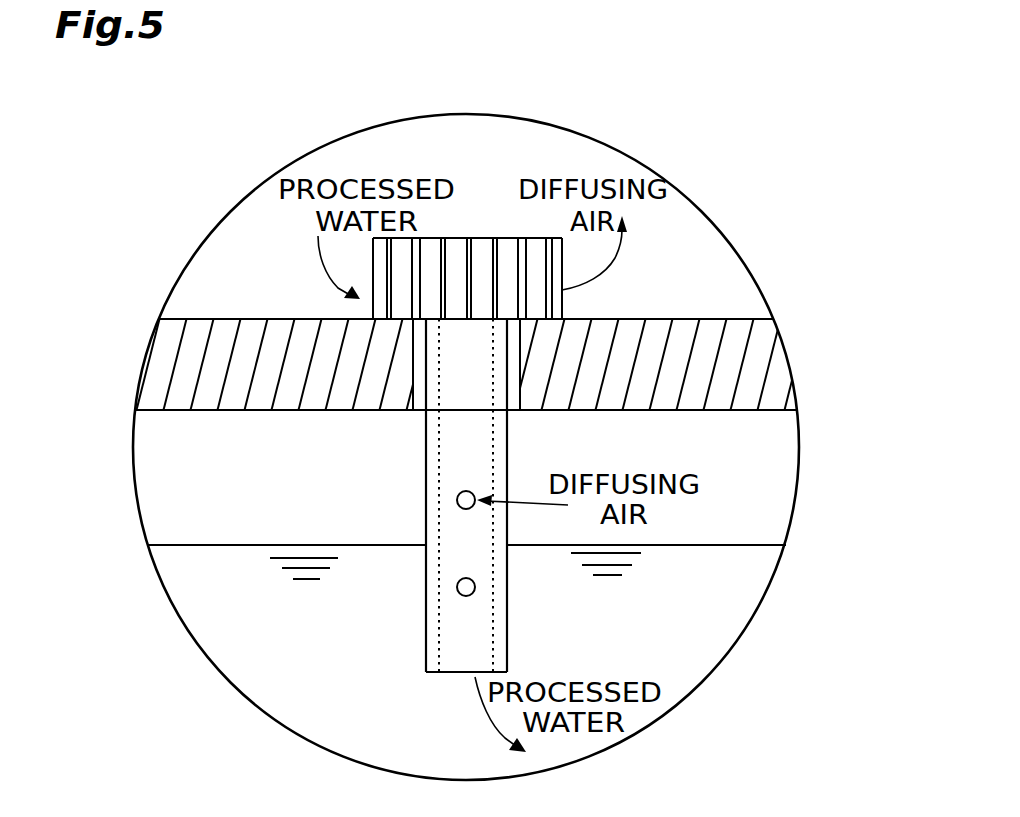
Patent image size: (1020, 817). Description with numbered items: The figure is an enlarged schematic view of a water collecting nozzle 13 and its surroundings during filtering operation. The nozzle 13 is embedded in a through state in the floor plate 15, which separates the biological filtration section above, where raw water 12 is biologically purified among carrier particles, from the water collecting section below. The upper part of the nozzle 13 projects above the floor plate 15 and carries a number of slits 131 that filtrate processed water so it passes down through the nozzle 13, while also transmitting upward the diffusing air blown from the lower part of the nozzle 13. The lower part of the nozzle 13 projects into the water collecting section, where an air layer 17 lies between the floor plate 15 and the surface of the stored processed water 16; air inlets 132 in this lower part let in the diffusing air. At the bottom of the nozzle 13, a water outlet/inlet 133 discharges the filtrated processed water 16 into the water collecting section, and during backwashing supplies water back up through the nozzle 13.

The raw water 12 is at (703, 238).
The water collecting nozzle 13 is at (425, 478).
The floor plate 15 is at (755, 372).
The processed water 16 is at (712, 630).
The air layer 17 is at (740, 498).
The slits 131 is at (468, 260).
The air inlets 132 is at (460, 506).
The water outlet/inlet 133 is at (446, 674).